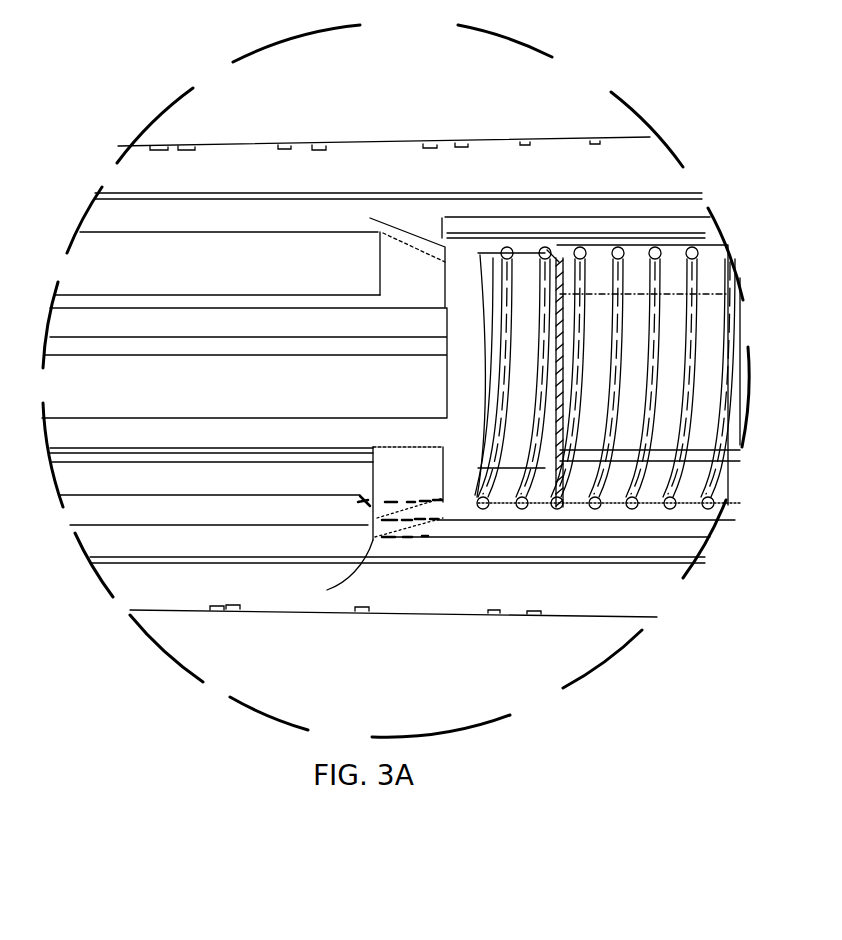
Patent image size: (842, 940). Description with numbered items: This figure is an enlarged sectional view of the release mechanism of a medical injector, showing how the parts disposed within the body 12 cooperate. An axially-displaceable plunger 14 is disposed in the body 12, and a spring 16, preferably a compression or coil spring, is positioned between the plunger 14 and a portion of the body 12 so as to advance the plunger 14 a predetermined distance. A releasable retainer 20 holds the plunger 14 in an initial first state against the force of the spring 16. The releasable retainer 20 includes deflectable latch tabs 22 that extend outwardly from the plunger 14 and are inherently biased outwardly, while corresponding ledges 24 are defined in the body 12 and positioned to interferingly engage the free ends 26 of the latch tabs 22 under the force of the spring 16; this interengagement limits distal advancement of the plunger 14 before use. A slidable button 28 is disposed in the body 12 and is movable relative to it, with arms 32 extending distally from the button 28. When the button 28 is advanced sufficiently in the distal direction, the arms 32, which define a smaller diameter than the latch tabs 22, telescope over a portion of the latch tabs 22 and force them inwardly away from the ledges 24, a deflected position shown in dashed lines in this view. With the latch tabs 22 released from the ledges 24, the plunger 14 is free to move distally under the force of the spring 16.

The body 12 is at (355, 145).
The plunger 14 is at (130, 300).
The spring 16 is at (586, 344).
The releasable retainer 20 is at (393, 230).
The latch tabs 22 is at (362, 498).
The ledges 24 is at (370, 225).
The free ends 26 is at (368, 224).
The slidable button 28 is at (432, 547).
The arms 32 is at (513, 228).